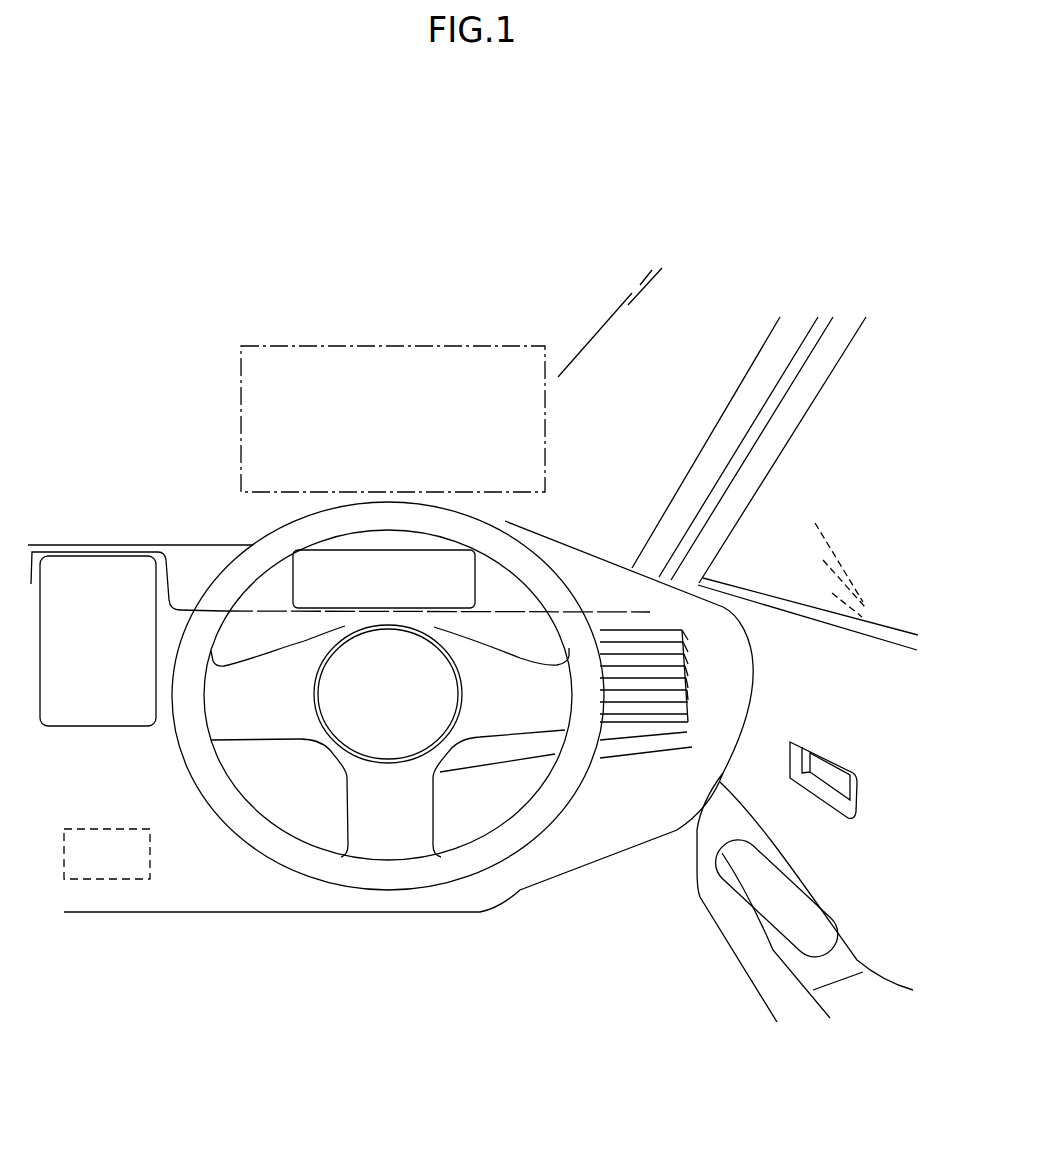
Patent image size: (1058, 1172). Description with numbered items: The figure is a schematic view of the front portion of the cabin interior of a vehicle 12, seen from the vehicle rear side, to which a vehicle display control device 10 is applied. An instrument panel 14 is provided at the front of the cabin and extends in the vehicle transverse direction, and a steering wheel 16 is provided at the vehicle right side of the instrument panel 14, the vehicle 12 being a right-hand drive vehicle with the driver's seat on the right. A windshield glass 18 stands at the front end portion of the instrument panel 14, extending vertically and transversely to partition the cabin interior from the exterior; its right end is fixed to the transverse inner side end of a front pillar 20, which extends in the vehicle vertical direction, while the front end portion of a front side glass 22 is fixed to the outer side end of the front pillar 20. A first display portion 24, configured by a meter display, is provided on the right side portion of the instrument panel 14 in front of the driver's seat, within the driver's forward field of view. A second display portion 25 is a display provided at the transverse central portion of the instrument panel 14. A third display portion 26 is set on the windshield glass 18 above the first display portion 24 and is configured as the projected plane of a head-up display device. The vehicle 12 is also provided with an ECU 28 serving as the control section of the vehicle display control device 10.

The vehicle display control device 10 is at (333, 308).
The vehicle 12 is at (377, 212).
The instrument panel 14 is at (592, 870).
The steering wheel 16 is at (563, 584).
The windshield glass 18 is at (682, 423).
The front pillar 20 is at (760, 360).
The front side glass 22 is at (887, 582).
The first display portion 24 is at (327, 573).
The second display portion 25 is at (101, 706).
The third display portion 26 is at (392, 346).
The ECU 28 is at (98, 880).